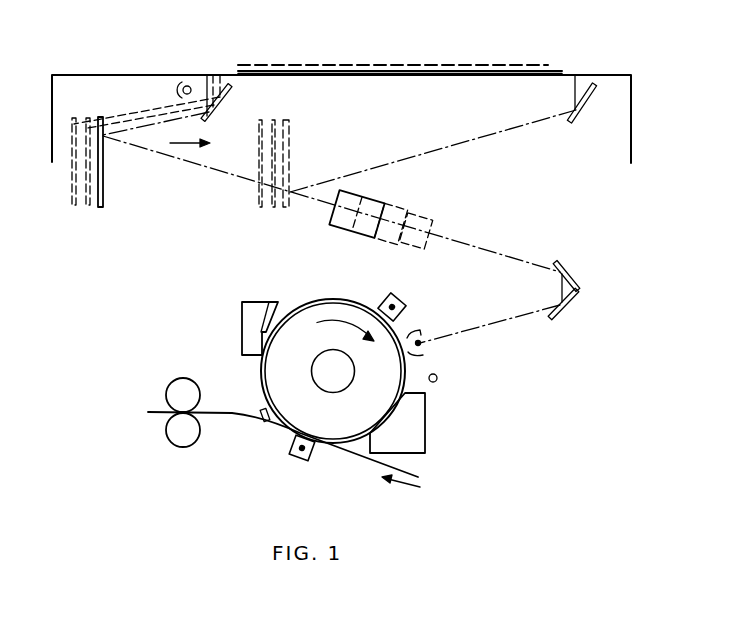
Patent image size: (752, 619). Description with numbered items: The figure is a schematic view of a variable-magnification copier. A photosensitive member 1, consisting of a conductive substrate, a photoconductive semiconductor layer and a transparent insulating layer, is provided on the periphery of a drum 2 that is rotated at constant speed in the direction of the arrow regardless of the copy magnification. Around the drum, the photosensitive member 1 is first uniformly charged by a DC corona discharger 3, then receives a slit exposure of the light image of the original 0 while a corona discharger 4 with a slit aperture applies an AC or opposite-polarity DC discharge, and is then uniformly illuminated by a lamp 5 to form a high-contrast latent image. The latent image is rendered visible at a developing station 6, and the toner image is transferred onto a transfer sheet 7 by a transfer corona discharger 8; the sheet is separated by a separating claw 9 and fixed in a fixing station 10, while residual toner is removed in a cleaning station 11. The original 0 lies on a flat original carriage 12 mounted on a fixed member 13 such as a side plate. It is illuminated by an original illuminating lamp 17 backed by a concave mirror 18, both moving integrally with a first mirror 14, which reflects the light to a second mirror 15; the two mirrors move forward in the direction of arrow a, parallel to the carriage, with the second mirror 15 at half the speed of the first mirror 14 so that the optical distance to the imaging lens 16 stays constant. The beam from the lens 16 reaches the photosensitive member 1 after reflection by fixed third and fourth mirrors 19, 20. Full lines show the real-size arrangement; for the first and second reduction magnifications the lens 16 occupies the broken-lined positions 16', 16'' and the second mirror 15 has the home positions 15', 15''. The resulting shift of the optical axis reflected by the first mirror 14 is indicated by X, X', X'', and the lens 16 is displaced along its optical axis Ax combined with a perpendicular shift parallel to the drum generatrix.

The photosensitive member 1 is at (325, 298).
The drum 2 is at (342, 312).
The DC corona discharger 3 is at (400, 298).
The corona discharger 4 is at (423, 355).
The lamp 5 is at (437, 380).
The developing device 6 is at (421, 432).
The transfer sheet 7 is at (367, 461).
The transfer corona discharger 8 is at (290, 454).
The separating claw 9 is at (263, 410).
The fixing station 10 is at (181, 383).
The cleaning station 11 is at (265, 307).
The original carriage 12 is at (422, 76).
The original 0 is at (372, 65).
The fixed member 13 is at (633, 97).
The first mirror 14 is at (226, 102).
The second mirror 15 is at (153, 169).
The home position of second mirror for magnification m1 15' is at (145, 178).
The home position of second mirror for magnification m2 15'' is at (125, 160).
The imaging lens 16 is at (367, 204).
The lens position for first reduction magnification 16' is at (414, 215).
The lens position for second reduction magnification 16'' is at (444, 229).
The original illuminating lamp 17 is at (186, 85).
The concave mirror 18 is at (175, 92).
The third mirror 19 is at (569, 265).
The fourth mirror 20 is at (568, 311).
The optical axis A is at (405, 150).
The optical axis Ax is at (507, 258).
The optical axis position at real-size magnification X is at (234, 66).
The optical axis position at magnification m1 X' is at (225, 58).
The optical axis position at magnification m2 X'' is at (196, 73).
The direction of forward displacement a is at (200, 143).